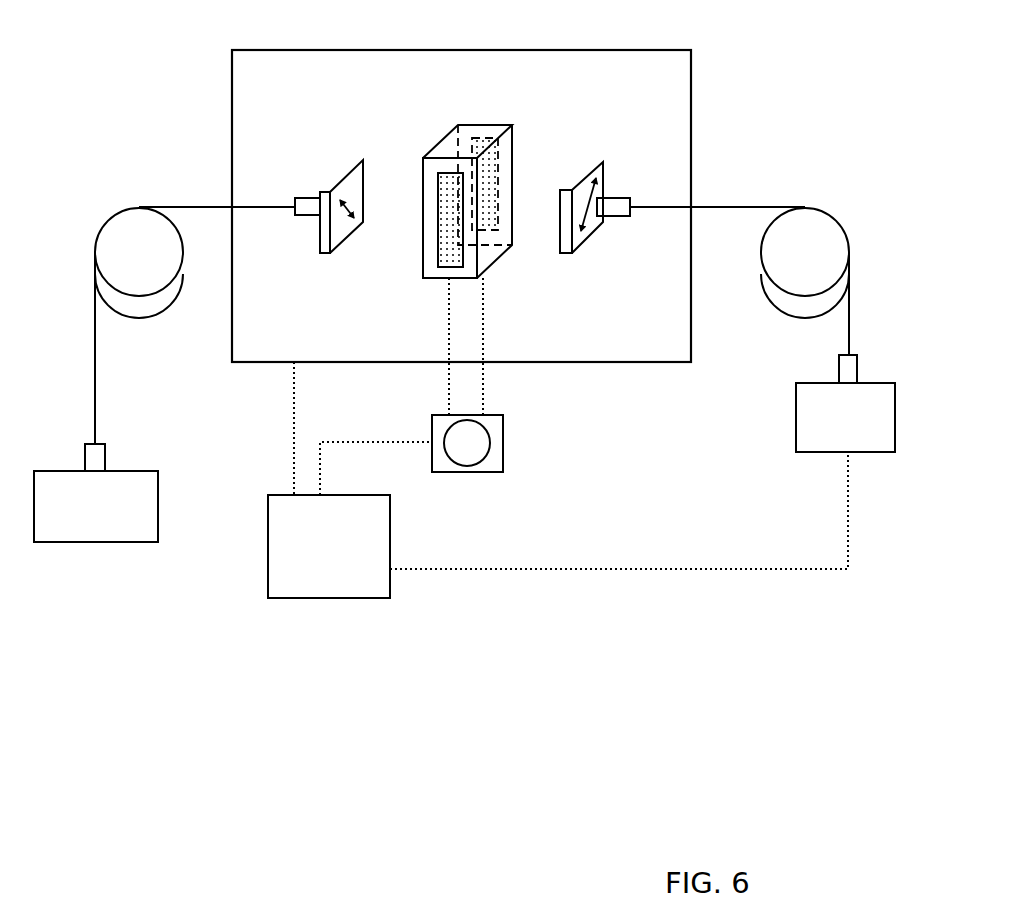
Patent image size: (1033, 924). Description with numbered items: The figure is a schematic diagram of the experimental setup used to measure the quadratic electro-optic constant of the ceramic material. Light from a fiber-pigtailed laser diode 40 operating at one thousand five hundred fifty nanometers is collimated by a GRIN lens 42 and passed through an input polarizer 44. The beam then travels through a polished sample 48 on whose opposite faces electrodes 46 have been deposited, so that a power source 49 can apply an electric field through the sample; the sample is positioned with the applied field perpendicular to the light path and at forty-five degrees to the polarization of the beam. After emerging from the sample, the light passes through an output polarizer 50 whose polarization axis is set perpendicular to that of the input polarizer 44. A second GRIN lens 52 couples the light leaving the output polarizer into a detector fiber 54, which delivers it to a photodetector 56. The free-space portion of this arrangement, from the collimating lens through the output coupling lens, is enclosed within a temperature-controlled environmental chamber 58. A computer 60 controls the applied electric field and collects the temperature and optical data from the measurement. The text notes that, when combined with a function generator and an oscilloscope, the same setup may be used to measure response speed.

The laser diode 40 is at (120, 543).
The GRIN lens 42 is at (297, 197).
The input polarizer 44 is at (348, 160).
The electrodes 46 is at (438, 232).
The polished sample 48 is at (458, 127).
The power source 49 is at (503, 460).
The output polarizer 50 is at (588, 163).
The GRIN lens 52 is at (618, 205).
The detector fiber 54 is at (770, 207).
The photodetector 56 is at (815, 452).
The temperature-controlled environmental chamber 58 is at (245, 50).
The computer 60 is at (328, 598).